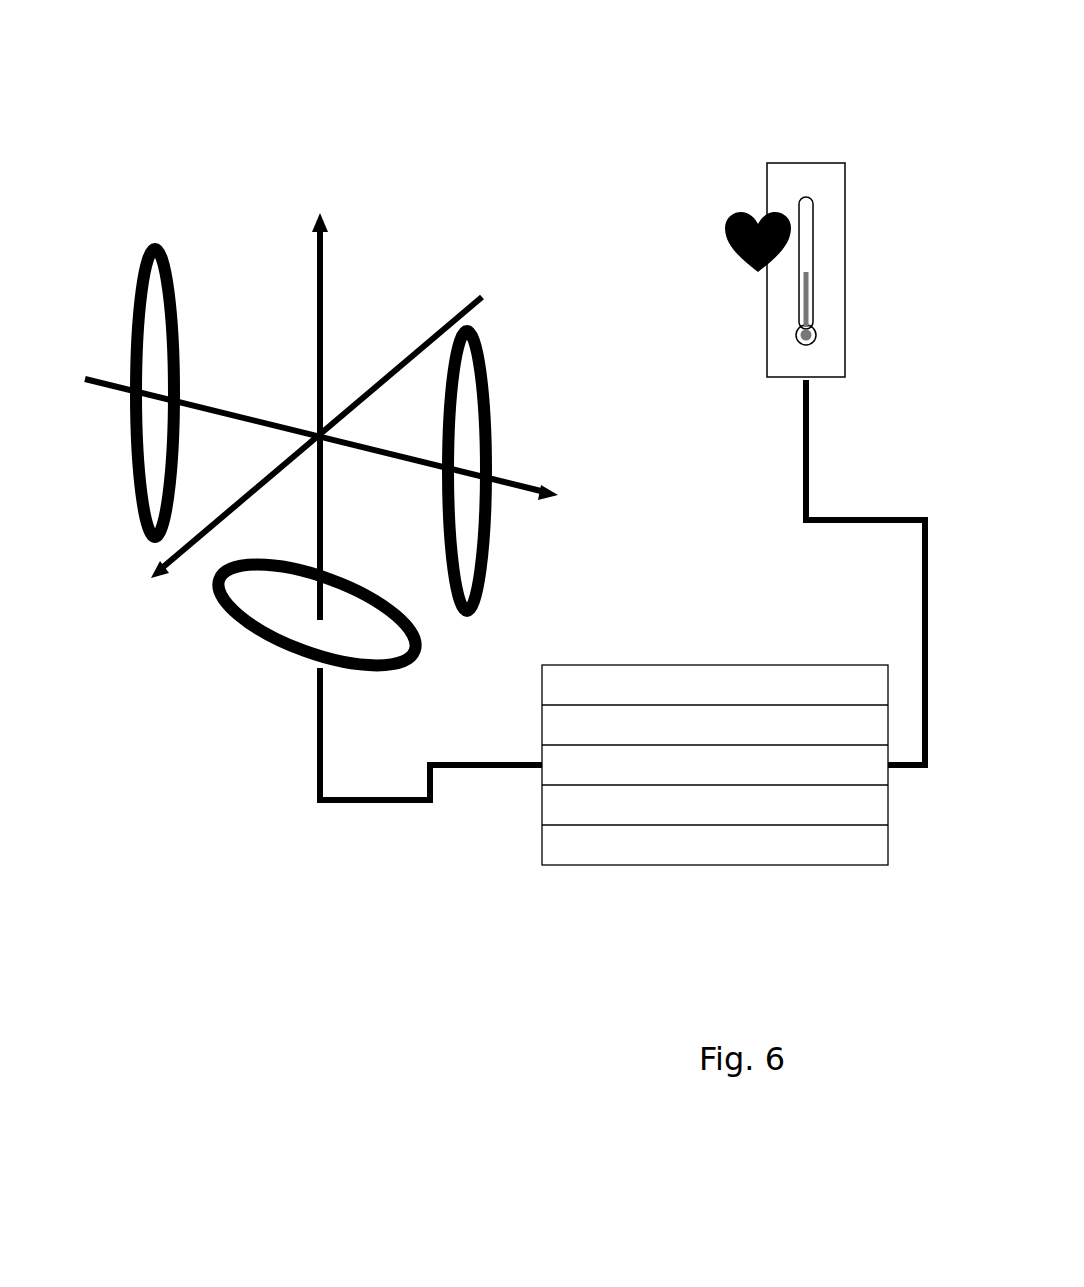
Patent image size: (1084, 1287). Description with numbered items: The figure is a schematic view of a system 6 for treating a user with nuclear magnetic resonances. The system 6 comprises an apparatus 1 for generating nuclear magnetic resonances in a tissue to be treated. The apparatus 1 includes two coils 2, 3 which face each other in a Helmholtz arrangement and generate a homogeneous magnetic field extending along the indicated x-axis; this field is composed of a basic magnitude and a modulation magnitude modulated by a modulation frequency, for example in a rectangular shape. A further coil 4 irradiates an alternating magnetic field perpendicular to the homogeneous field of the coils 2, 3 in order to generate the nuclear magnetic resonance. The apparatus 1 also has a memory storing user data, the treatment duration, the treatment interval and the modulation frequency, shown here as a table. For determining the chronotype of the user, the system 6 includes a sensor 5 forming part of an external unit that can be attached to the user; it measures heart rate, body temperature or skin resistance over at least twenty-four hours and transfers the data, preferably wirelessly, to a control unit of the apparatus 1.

The apparatus 1 is at (184, 858).
The coil 2 is at (482, 343).
The coil 3 is at (155, 246).
The coil 4 is at (260, 643).
The sensor 5 is at (787, 182).
The system 6 is at (344, 907).